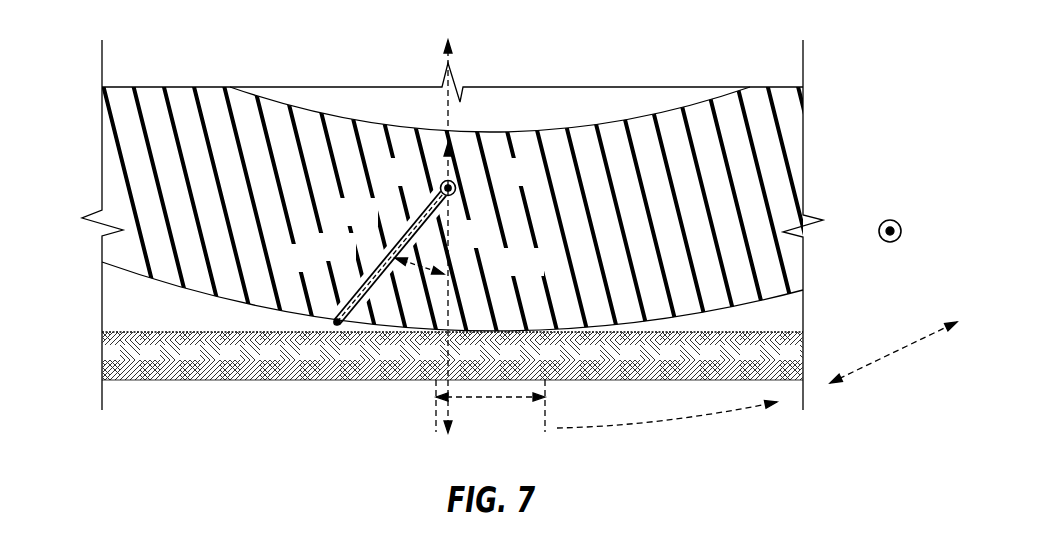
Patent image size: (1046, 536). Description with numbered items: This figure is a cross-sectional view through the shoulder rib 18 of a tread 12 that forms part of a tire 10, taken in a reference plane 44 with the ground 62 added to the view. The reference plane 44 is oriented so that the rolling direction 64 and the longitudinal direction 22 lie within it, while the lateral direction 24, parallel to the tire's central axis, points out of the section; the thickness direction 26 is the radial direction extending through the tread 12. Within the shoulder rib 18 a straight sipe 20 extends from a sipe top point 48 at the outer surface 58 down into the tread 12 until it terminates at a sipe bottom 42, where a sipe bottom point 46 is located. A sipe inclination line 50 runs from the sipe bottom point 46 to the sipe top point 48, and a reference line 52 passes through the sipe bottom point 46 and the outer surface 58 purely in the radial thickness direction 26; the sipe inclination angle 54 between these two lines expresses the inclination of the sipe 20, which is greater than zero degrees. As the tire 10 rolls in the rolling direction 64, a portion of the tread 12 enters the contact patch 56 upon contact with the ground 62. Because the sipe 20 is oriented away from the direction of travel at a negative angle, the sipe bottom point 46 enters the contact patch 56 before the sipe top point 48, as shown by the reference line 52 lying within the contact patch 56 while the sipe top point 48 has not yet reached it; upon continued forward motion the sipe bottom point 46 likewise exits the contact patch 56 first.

The tire 10 is at (648, 123).
The tread 12 is at (752, 100).
The shoulder rib 18 is at (115, 136).
The sipe 20 is at (380, 266).
The longitudinal direction 22 is at (890, 357).
The lateral direction 24 is at (890, 219).
The thickness direction 26 is at (450, 121).
The sipe bottom 42 is at (458, 190).
The reference plane 44 is at (102, 245).
The sipe bottom point 46 is at (442, 185).
The sipe top point 48 is at (334, 318).
The sipe inclination line 50 is at (405, 228).
The reference line 52 is at (448, 290).
The sipe inclination angle 54 is at (420, 262).
The contact patch 56 is at (474, 398).
The outer surface 58 is at (123, 293).
The ground 62 is at (148, 333).
The rolling direction 64 is at (672, 420).